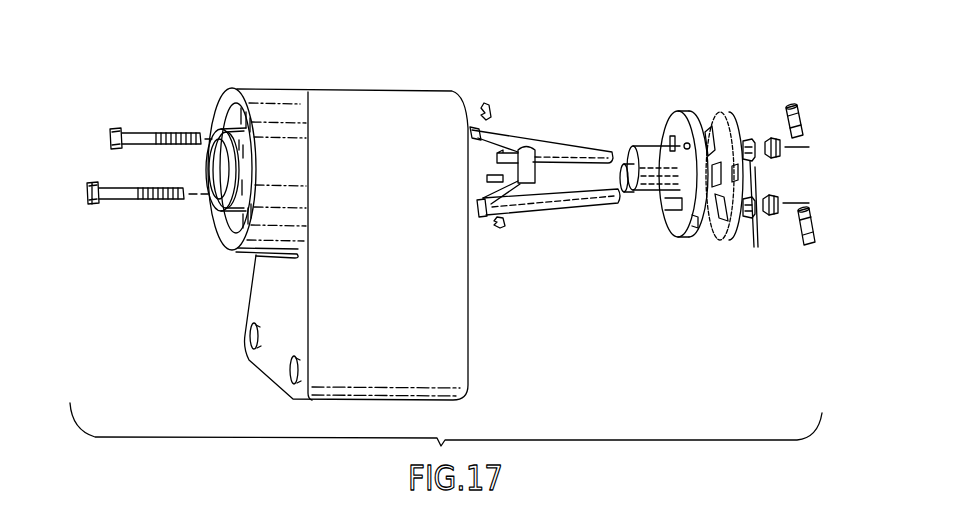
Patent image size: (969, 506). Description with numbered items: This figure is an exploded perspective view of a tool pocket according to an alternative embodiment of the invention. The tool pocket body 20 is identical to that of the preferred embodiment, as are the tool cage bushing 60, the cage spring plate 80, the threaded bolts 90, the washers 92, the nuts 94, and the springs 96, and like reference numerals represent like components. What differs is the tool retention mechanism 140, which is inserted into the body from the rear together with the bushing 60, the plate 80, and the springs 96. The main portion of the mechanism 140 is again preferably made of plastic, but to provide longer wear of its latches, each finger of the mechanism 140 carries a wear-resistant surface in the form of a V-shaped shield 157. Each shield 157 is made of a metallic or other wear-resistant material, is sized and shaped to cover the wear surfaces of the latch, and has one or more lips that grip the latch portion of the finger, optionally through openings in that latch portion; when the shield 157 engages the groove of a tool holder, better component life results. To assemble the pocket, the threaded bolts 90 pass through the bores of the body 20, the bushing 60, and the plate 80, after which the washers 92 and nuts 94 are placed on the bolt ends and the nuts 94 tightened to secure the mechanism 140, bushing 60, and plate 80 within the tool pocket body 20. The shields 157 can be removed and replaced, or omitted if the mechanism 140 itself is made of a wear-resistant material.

The tool pocket body 20 is at (451, 321).
The threaded bolts 90 is at (108, 135).
The tool retention mechanism 140 is at (528, 131).
The V-shaped shield 157 is at (487, 101).
The tool cage bushing 60 is at (683, 110).
The cage spring plate 80 is at (725, 110).
The washers 92 is at (757, 240).
The nuts 94 is at (778, 159).
The springs 96 is at (802, 121).